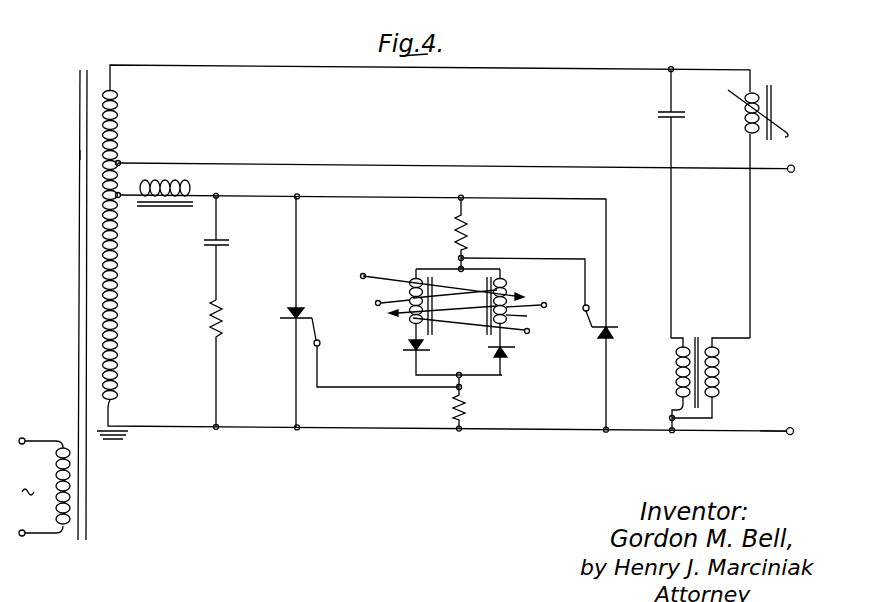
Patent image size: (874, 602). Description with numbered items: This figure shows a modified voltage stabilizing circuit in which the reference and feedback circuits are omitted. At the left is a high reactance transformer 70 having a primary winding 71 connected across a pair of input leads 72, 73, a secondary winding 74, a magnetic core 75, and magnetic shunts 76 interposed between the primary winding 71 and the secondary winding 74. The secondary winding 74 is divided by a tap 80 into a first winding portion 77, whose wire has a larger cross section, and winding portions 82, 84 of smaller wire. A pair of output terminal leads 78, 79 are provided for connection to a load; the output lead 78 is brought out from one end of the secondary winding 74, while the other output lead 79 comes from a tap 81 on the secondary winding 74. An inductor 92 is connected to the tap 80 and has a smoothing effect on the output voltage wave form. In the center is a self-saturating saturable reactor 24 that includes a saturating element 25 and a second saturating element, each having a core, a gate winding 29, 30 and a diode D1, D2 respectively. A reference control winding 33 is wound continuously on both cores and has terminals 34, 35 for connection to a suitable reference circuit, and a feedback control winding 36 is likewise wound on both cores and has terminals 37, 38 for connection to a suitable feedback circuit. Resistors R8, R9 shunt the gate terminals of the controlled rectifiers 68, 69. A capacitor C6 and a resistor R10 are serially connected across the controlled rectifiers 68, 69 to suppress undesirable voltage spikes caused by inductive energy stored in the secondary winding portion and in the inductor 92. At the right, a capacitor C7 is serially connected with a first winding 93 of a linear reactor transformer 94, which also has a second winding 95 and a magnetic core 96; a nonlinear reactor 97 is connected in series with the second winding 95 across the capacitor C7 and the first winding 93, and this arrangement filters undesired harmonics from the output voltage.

The high reactance transformer 70 is at (83, 70).
The magnetic core 75 is at (79, 153).
The primary winding 71 is at (56, 476).
The input lead 72 is at (38, 440).
The input lead 73 is at (43, 536).
The secondary winding 74 is at (130, 139).
The magnetic shunts 76 is at (118, 447).
The first winding portion 77 is at (118, 372).
The output terminal lead 78 is at (763, 430).
The output terminal lead 79 is at (556, 165).
The tap 80 is at (121, 205).
The tap 81 is at (121, 163).
The winding portion 82 is at (117, 121).
The winding portion 84 is at (118, 177).
The inductor 92 is at (193, 188).
The controlled rectifier 68 is at (290, 306).
The controlled rectifier 69 is at (611, 325).
The self-saturating saturable reactor 24 is at (427, 257).
The saturating element 25 is at (406, 268).
The gate winding 29 is at (410, 291).
The reference control winding 33 is at (363, 273).
The terminal 34 is at (360, 278).
The terminal 35 is at (376, 305).
The feedback control winding 36 is at (533, 303).
The terminal 37 is at (547, 304).
The gate winding 30 is at (527, 316).
The terminal 38 is at (530, 332).
The first winding 93 is at (677, 380).
The linear reactor transformer 94 is at (696, 333).
The second winding 95 is at (721, 380).
The magnetic core 96 is at (701, 343).
The nonlinear reactor 97 is at (773, 108).
The capacitor C6 is at (230, 242).
The capacitor C7 is at (656, 115).
The resistor R8 is at (471, 237).
The resistor R9 is at (466, 408).
The resistor R10 is at (223, 320).
The diode D1 is at (406, 346).
The diode D2 is at (511, 351).